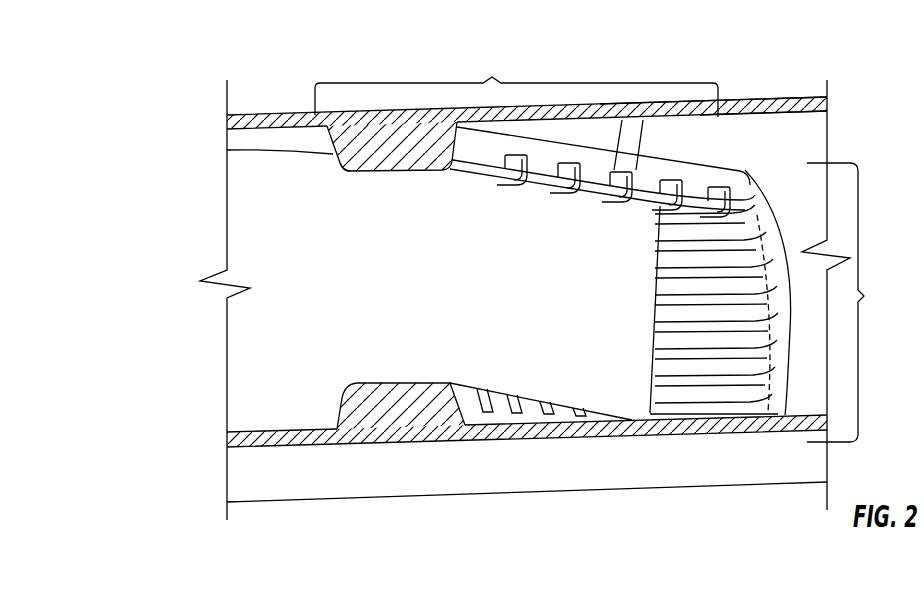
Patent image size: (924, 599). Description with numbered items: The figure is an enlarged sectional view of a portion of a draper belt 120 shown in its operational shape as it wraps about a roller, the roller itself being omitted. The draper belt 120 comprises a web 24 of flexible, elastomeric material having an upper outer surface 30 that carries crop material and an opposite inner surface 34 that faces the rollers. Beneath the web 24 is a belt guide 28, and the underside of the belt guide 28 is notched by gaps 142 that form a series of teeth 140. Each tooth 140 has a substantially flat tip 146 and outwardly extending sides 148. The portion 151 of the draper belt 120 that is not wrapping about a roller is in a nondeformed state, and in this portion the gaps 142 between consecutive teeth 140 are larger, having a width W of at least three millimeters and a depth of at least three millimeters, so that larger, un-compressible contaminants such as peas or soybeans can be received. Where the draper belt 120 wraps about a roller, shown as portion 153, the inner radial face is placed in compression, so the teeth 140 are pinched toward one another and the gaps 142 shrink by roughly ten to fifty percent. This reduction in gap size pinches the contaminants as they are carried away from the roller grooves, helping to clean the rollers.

The web 24 is at (258, 113).
The belt guide 28 is at (346, 178).
The upper outer surface 30 is at (782, 97).
The inner surface 34 is at (803, 115).
The draper belt 120 is at (166, 197).
The teeth 140 is at (457, 172).
The gaps 142 is at (527, 180).
The tip 146 is at (403, 173).
The sides 148 is at (227, 151).
The portion 151 is at (516, 81).
The portion 153 is at (853, 302).
The width W is at (597, 137).